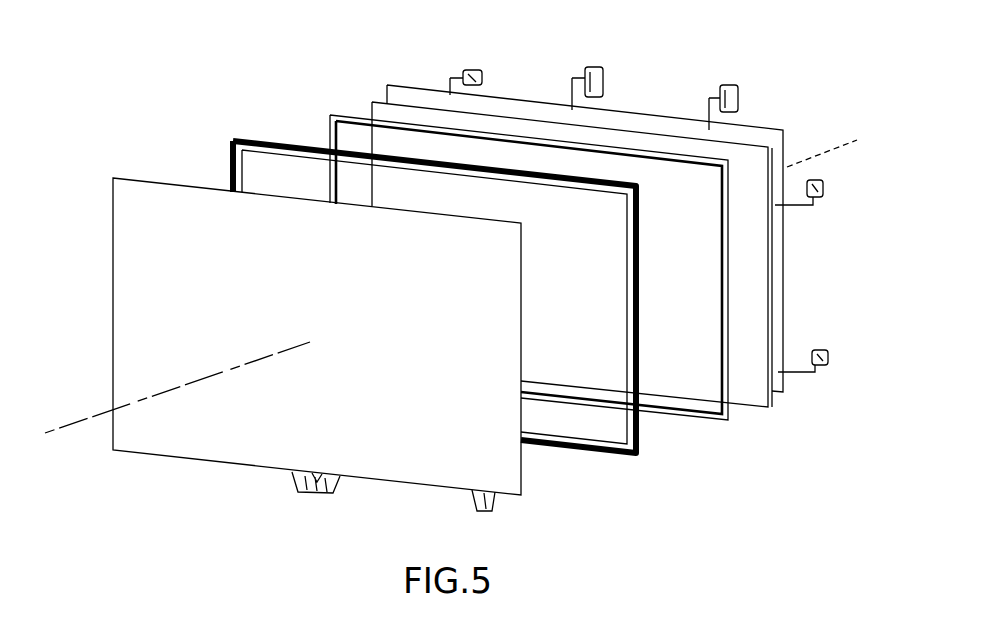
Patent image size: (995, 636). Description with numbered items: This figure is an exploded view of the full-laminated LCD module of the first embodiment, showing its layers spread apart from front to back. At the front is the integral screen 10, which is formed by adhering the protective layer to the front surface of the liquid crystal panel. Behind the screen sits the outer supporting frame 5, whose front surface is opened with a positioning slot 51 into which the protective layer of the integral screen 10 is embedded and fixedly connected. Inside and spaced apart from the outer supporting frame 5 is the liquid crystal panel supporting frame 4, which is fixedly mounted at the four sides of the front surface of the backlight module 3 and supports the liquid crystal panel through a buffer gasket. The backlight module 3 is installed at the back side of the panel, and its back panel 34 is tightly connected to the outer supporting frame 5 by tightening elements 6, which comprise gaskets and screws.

The integral screen 10 is at (163, 328).
The outer supporting frame 5 is at (397, 263).
The positioning slot 51 is at (229, 166).
The liquid crystal panel supporting frame 4 is at (727, 292).
The backlight module 3 is at (743, 159).
The back panel 34 is at (542, 100).
The tightening elements 6 is at (468, 72).